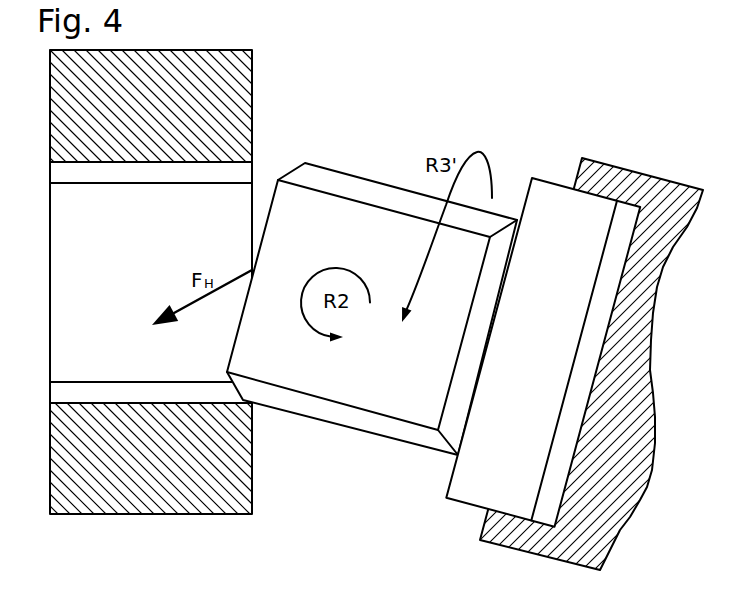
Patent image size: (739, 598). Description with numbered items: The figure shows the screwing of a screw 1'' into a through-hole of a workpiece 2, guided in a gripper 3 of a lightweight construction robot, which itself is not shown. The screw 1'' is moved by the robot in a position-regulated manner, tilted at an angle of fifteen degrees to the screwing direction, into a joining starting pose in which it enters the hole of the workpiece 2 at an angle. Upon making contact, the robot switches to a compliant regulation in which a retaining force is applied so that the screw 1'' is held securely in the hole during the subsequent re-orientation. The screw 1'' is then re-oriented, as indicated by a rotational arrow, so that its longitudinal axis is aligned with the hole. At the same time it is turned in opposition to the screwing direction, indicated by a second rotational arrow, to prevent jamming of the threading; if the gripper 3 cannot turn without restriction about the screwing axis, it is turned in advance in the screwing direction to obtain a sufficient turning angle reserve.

The workpiece 2 is at (126, 110).
The screw 1'' is at (543, 352).
The gripper 3 is at (612, 425).